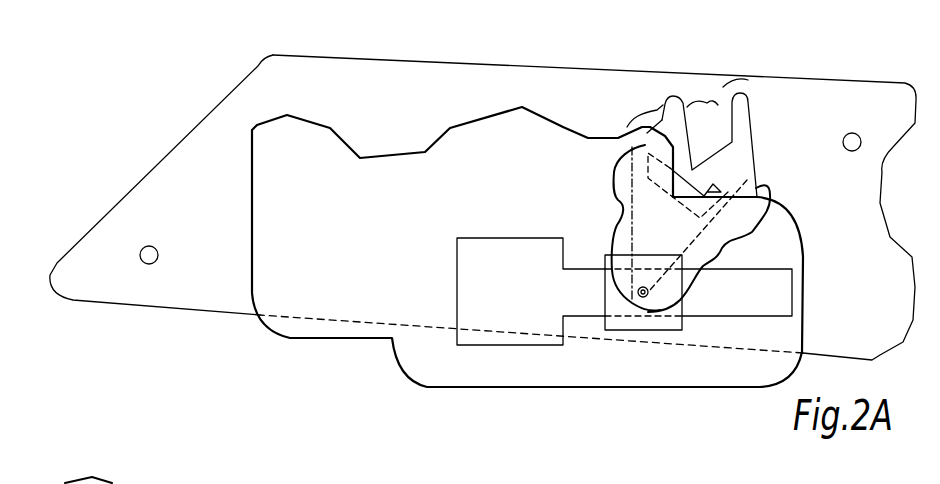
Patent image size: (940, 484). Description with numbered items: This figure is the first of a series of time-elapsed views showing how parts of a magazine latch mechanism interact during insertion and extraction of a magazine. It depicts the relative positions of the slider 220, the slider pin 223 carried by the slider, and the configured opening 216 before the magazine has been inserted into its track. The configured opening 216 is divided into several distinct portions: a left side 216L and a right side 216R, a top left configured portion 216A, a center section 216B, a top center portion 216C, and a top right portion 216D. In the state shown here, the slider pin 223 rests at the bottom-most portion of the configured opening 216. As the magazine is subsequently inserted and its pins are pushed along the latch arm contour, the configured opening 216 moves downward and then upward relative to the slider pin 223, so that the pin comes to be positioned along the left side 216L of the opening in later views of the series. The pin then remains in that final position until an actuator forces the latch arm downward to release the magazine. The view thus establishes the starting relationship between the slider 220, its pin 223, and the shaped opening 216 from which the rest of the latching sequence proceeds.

The configured opening 216 is at (743, 117).
The top left configured portion 216A is at (645, 110).
The center section 216B is at (713, 186).
The top center portion 216C is at (707, 100).
The top right portion 216D is at (723, 87).
The left side 216L is at (613, 217).
The right side 216R is at (720, 250).
The slider 220 is at (658, 332).
The slider pin 223 is at (643, 296).